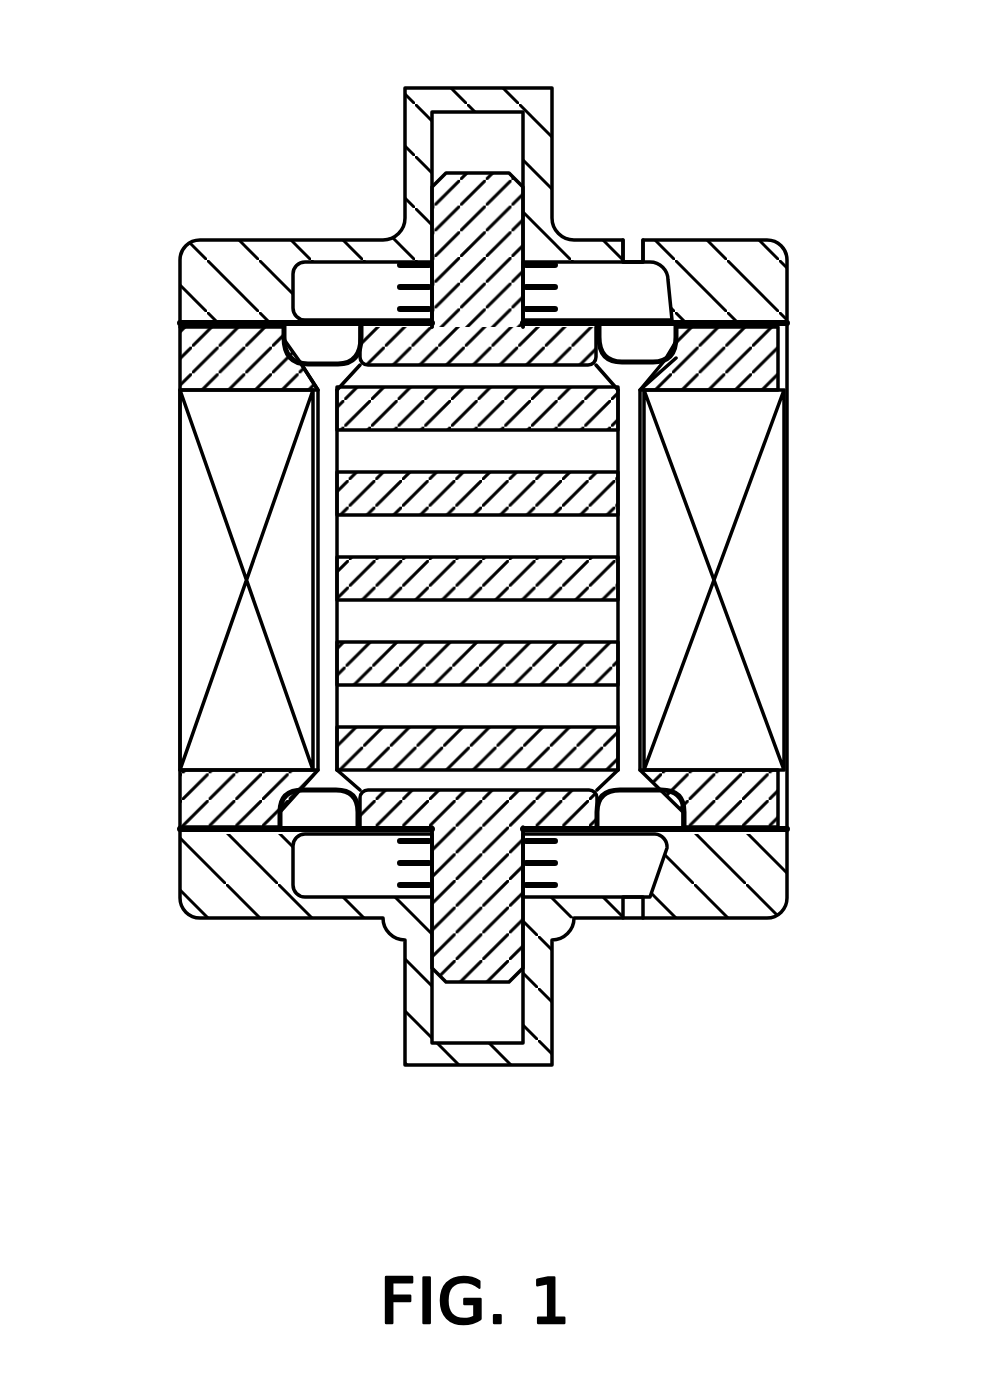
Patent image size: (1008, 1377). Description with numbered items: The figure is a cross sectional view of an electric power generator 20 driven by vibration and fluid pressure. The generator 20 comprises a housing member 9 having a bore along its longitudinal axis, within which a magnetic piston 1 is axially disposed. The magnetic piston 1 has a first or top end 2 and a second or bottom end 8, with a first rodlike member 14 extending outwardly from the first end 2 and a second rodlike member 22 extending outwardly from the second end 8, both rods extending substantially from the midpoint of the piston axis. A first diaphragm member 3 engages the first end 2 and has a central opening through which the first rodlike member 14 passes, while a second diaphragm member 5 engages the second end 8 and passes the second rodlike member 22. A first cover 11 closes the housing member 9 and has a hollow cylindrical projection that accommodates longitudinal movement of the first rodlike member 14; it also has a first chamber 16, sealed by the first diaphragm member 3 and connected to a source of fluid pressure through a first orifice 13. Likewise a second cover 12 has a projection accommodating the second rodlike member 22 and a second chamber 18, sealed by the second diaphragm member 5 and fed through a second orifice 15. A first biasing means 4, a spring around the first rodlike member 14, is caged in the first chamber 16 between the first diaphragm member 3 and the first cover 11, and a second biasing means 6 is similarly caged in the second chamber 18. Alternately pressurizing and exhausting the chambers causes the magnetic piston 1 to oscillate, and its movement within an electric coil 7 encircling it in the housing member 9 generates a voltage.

The electric power generator 20 is at (226, 180).
The magnetic piston 1 is at (352, 573).
The first end 2 is at (552, 343).
The first diaphragm member 3 is at (337, 352).
The first biasing means 4 is at (588, 262).
The second diaphragm member 5 is at (314, 837).
The second biasing means 6 is at (403, 867).
The electric coil 7 is at (722, 695).
The second end 8 is at (430, 805).
The housing member 9 is at (755, 353).
The first cover 11 is at (197, 267).
The second cover 12 is at (195, 870).
The first orifice 13 is at (634, 240).
The first rodlike member 14 is at (475, 190).
The second orifice 15 is at (630, 908).
The first chamber 16 is at (650, 298).
The second chamber 18 is at (632, 858).
The second rodlike member 22 is at (473, 950).